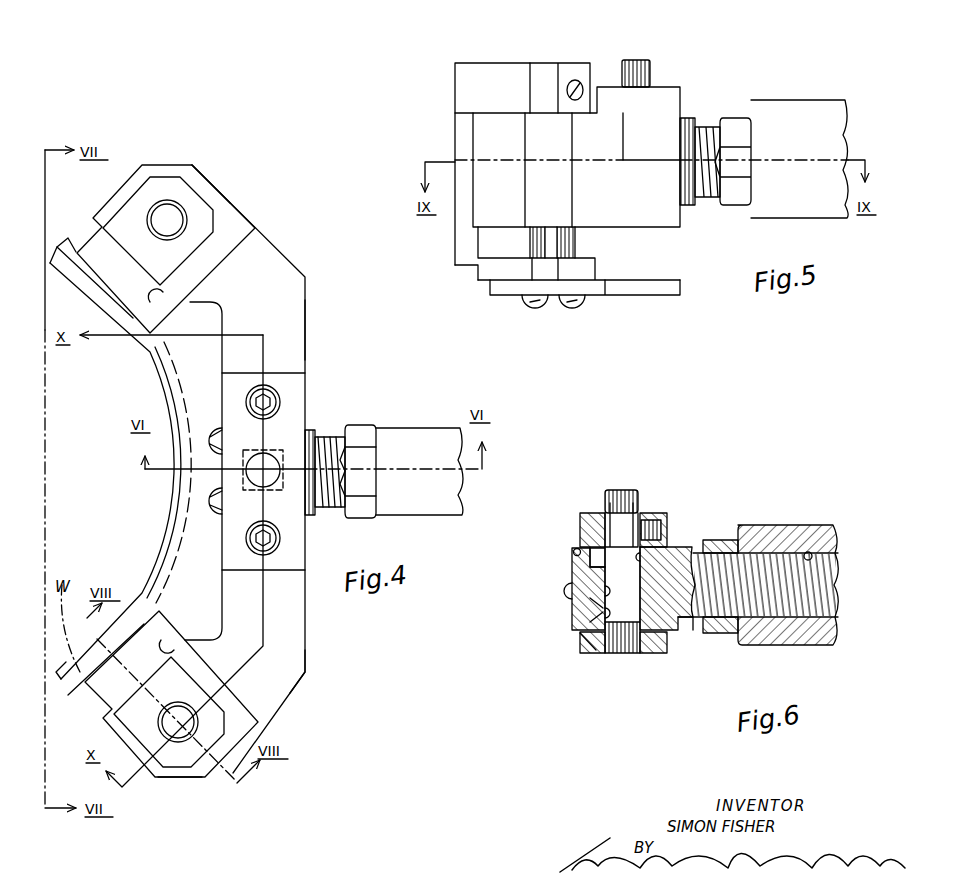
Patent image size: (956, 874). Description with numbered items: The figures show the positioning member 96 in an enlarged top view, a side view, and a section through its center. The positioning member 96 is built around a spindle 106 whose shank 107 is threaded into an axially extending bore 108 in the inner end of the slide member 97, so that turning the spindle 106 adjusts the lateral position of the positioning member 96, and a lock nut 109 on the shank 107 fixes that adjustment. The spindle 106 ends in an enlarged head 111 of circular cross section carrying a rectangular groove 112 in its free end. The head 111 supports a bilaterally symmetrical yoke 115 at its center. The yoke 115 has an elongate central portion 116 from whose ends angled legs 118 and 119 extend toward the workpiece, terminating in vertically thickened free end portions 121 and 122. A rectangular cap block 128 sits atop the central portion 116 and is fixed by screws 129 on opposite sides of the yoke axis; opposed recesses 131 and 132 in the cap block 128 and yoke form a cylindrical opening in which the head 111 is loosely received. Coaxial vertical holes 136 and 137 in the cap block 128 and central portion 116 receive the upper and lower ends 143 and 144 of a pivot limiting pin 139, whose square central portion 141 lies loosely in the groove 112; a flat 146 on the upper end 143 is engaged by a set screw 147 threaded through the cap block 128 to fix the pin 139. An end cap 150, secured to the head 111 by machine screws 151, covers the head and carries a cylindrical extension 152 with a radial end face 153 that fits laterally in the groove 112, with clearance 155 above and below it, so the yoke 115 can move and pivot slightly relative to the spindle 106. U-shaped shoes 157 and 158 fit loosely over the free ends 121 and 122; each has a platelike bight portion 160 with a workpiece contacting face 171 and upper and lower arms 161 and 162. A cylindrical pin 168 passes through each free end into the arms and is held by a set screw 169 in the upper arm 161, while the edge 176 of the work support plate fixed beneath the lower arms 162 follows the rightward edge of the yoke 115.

In FIG. 4, the positioning member 96 is at (352, 624).
In FIG. 5, the positioning member 96 is at (702, 63).
In FIG. 6, the positioning member 96 is at (682, 672).
In FIG. 4, the slide member 97 is at (420, 432).
In FIG. 5, the slide member 97 is at (799, 159).
In FIG. 6, the slide member 97 is at (795, 634).
In FIG. 4, the spindle 106 is at (323, 434).
In FIG. 5, the spindle 106 is at (700, 161).
In FIG. 6, the spindle 106 is at (688, 549).
In FIG. 6, the shank 107 is at (788, 560).
In FIG. 6, the axially extending bore 108 is at (810, 552).
In FIG. 4, the lock nut 109 is at (363, 431).
In FIG. 5, the lock nut 109 is at (733, 161).
In FIG. 6, the lock nut 109 is at (727, 628).
In FIG. 6, the enlarged head 111 is at (685, 625).
In FIG. 6, the groove 112 is at (683, 548).
In FIG. 4, the yoke 115 is at (310, 297).
In FIG. 5, the yoke 115 is at (680, 236).
In FIG. 6, the yoke 115 is at (597, 654).
In FIG. 4, the central portion 116 is at (290, 329).
In FIG. 5, the central portion 116 is at (660, 200).
In FIG. 4, the leg 118 is at (247, 241).
In FIG. 4, the leg 119 is at (275, 673).
In FIG. 4, the free end portion 121 is at (205, 192).
In FIG. 4, the free end portion 122 is at (210, 762).
In FIG. 5, the free end portion 122 is at (488, 150).
In FIG. 4, the cap block 128 is at (300, 541).
In FIG. 5, the cap block 128 is at (668, 102).
In FIG. 6, the cap block 128 is at (586, 515).
In FIG. 4, the screws 129 is at (280, 397).
In FIG. 5, the screws 129 is at (640, 66).
In FIG. 6, the screws 129 is at (630, 500).
In FIG. 6, the recess 131 is at (576, 548).
In FIG. 6, the recess 132 is at (600, 612).
In FIG. 6, the vertical hole 136 is at (612, 535).
In FIG. 6, the vertical hole 137 is at (615, 657).
In FIG. 4, the pivot limiting pin 139 is at (255, 483).
In FIG. 6, the pivot limiting pin 139 is at (590, 622).
In FIG. 6, the central portion 141 is at (583, 652).
In FIG. 6, the upper end 143 is at (620, 535).
In FIG. 6, the lower end 144 is at (627, 654).
In FIG. 6, the flat 146 is at (650, 530).
In FIG. 6, the set screw 147 is at (646, 515).
In FIG. 4, the end cap 150 is at (213, 480).
In FIG. 6, the end cap 150 is at (568, 563).
In FIG. 4, the machine screws 151 is at (205, 503).
In FIG. 6, the cylindrical extension 152 is at (572, 582).
In FIG. 6, the radial end face 153 is at (600, 608).
In FIG. 6, the clearance 155 is at (574, 550).
In FIG. 4, the shoe 157 is at (84, 240).
In FIG. 4, the shoe 158 is at (178, 775).
In FIG. 5, the shoe 158 is at (532, 62).
In FIG. 5, the bight portion 160 is at (463, 115).
In FIG. 5, the upper arm 161 is at (485, 82).
In FIG. 5, the lower arm 162 is at (510, 275).
In FIG. 5, the cylindrical pin 168 is at (557, 242).
In FIG. 5, the set screw 169 is at (580, 90).
In FIG. 4, the workpiece contacting face 171 is at (97, 296).
In FIG. 5, the edge 176 is at (490, 286).